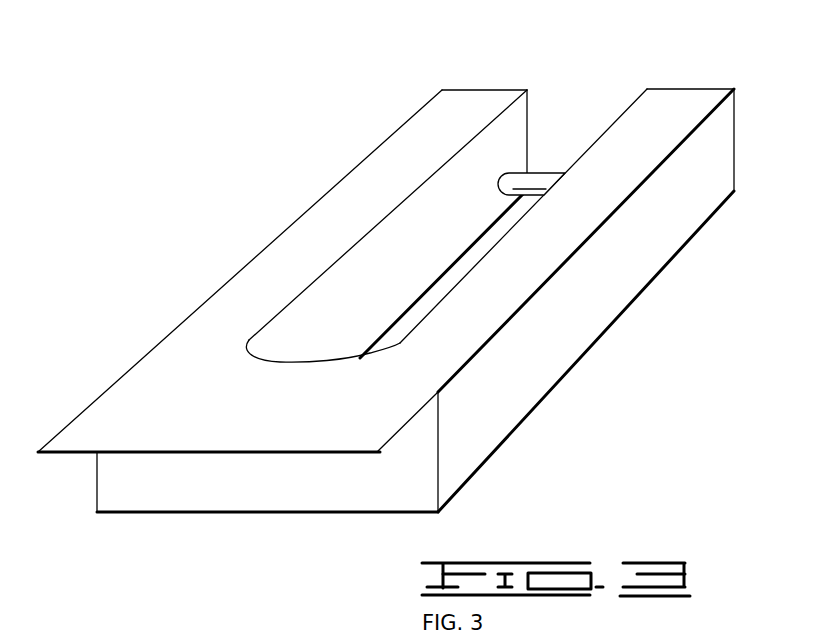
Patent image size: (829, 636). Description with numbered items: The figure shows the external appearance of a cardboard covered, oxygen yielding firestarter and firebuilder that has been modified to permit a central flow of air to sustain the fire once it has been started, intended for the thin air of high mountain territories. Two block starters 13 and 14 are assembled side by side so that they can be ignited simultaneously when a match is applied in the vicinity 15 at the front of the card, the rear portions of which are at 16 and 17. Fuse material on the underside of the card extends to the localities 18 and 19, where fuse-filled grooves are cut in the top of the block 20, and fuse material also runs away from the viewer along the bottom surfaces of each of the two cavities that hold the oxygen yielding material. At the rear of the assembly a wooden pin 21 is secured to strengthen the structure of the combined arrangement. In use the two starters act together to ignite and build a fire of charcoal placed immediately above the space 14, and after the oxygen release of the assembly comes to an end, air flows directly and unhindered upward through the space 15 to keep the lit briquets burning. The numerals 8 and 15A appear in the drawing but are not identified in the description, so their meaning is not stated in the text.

The base block 8 is at (512, 432).
The block starter 13 is at (682, 248).
The block starter 14 is at (460, 267).
The front of the card 15 is at (237, 453).
The rounded end of groove 15A is at (353, 390).
The rear portion of the card 16 is at (685, 88).
The rear portion of the card 17 is at (477, 90).
The locality of fuse-filled groove 18 is at (430, 362).
The locality of fuse-filled groove 19 is at (172, 373).
The block 20 is at (403, 488).
The wooden pin 21 is at (542, 173).